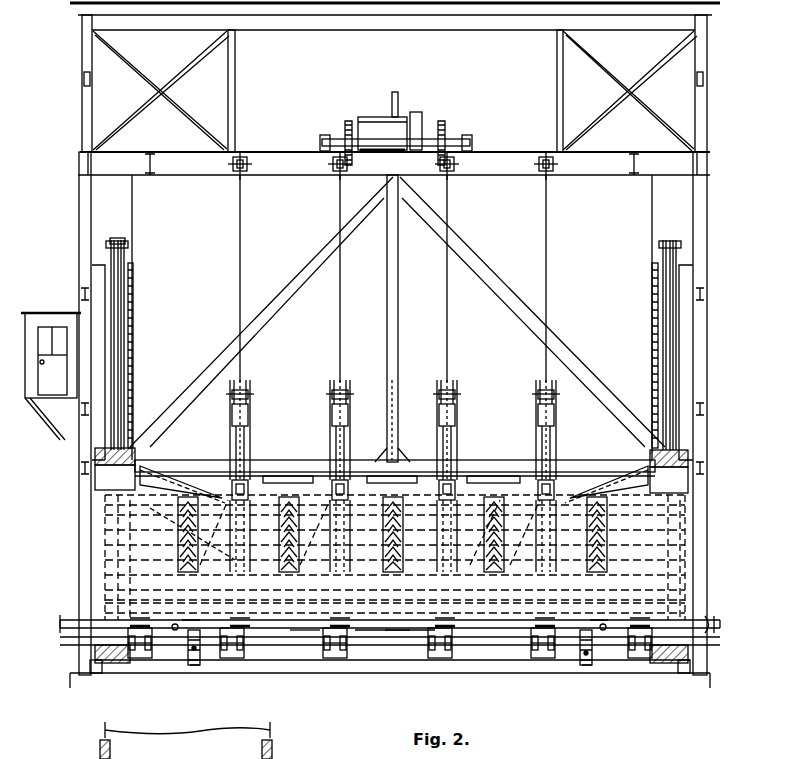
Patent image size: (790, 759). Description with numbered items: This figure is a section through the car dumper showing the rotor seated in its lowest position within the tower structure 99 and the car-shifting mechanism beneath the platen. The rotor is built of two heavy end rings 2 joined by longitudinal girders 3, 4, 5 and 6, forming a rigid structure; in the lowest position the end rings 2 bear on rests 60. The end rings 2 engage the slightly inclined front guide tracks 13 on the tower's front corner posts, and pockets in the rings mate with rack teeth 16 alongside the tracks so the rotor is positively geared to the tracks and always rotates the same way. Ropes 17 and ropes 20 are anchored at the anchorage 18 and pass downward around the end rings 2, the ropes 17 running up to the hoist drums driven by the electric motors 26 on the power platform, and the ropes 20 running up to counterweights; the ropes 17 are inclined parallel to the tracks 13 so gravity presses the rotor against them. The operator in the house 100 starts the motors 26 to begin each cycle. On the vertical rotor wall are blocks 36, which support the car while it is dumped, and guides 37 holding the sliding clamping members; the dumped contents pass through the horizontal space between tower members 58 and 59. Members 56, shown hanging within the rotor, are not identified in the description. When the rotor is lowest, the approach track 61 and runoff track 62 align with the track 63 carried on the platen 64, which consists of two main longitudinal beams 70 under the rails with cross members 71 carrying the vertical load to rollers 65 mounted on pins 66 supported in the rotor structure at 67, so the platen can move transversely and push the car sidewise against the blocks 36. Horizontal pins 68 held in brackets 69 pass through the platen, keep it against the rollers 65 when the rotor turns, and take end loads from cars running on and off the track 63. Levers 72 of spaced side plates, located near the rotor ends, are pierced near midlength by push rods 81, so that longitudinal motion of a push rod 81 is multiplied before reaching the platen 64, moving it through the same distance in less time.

The frame structure 99 is at (78, 202).
The electric motors 26 is at (378, 118).
The house 100 is at (30, 345).
The front guide tracks 13 is at (100, 264).
The ropes 17 is at (115, 240).
The ropes 20 is at (124, 240).
The anchorage 18 is at (130, 243).
The rack teeth 16 is at (134, 296).
The end rings 2 is at (103, 448).
The tower member 58 is at (469, 462).
The tower member 59 is at (367, 520).
The hanger 56 is at (212, 477).
The blocks 36 is at (178, 572).
The guides 37 is at (228, 570).
The longitudinal girder 3 is at (688, 532).
The longitudinal girder 4 is at (118, 545).
The longitudinal girder 5 is at (120, 600).
The approach track 61 is at (65, 620).
The runoff track 62 is at (715, 622).
The rotor structure support 67 is at (100, 641).
The rollers 65 is at (232, 660).
The cross members 71 is at (135, 628).
The rests 60 is at (98, 672).
The pins 66 is at (230, 620).
The push rod 81 is at (188, 660).
The levers 72 is at (196, 666).
The brackets 69 is at (175, 625).
The horizontal pins 68 is at (182, 625).
The platen 64 is at (305, 625).
The track 63 is at (393, 625).
The main longitudinal beams 70 is at (408, 633).
The longitudinal girder 6 is at (222, 666).